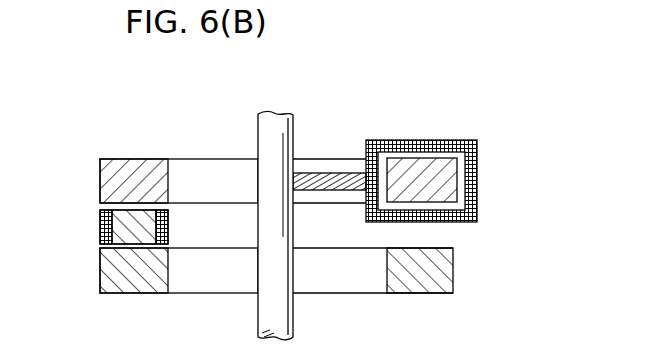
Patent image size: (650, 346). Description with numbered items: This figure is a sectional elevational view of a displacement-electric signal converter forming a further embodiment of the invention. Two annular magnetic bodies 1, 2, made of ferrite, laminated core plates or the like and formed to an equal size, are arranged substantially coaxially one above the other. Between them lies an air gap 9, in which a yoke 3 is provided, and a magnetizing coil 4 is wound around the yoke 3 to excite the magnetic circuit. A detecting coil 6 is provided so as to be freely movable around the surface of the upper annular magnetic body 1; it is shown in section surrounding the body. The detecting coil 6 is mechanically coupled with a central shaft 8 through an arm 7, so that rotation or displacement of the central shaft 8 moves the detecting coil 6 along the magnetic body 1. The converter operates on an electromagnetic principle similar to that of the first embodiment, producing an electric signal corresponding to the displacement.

The annular magnetic body 1 is at (438, 171).
The annular magnetic body 2 is at (421, 293).
The yoke 3 is at (125, 231).
The magnetizing coil 4 is at (100, 223).
The detecting coil 6 is at (393, 140).
The arm 7 is at (328, 173).
The central shaft 8 is at (293, 305).
The air gap 9 is at (423, 232).